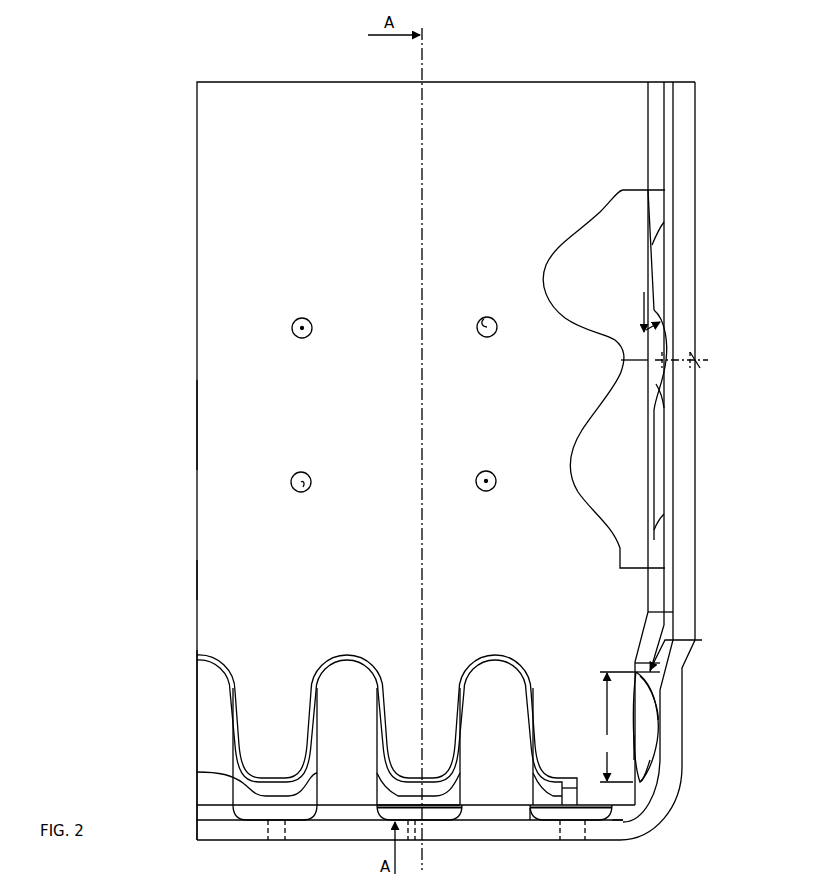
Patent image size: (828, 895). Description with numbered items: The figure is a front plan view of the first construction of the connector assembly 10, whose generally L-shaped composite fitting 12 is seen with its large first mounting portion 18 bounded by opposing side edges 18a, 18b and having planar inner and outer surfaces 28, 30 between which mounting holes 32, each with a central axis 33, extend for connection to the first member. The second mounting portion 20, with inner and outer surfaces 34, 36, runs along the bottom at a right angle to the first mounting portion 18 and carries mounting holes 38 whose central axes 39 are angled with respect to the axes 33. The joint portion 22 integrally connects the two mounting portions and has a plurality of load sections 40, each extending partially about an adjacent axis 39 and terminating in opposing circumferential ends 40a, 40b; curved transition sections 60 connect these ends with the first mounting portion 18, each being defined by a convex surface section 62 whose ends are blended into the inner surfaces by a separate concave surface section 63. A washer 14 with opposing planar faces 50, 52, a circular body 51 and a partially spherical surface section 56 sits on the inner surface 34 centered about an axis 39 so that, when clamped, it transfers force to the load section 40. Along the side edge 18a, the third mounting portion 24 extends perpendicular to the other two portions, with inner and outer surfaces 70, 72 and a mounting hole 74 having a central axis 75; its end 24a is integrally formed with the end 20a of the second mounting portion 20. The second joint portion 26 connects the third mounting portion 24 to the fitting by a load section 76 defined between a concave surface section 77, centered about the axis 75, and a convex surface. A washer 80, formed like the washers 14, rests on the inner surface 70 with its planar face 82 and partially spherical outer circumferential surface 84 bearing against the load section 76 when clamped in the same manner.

The connector assembly 10 is at (88, 628).
The fitting 12 is at (155, 250).
The washer 14 is at (380, 794).
The first mounting portion 18 is at (185, 317).
The side edge of first mounting portion 18a is at (650, 122).
The side edge of first mounting portion 18b is at (197, 423).
The second mounting portion 20 is at (528, 842).
The end of second mounting portion 20a is at (655, 816).
The joint portion 22 is at (187, 708).
The third mounting portion 24 is at (706, 467).
The end of third mounting portion 24a is at (648, 100).
The second joint portion 26 is at (600, 212).
The inner surface of first mounting portion 28 is at (222, 572).
The outer surface of first mounting portion 30 is at (410, 838).
The mounting hole 32 is at (486, 318).
The central axis of mounting hole 33 is at (310, 325).
The inner surface of second mounting portion 34 is at (486, 806).
The outer surface of second mounting portion 36 is at (480, 842).
The mounting hole 38 is at (275, 842).
The central axis of mounting hole 39 is at (272, 848).
The load section 40 is at (262, 794).
The circumferential end of load section 40a is at (316, 812).
The circumferential end of load section 40b is at (236, 814).
The first face of washer 50 is at (572, 780).
The circular body of washer 51 is at (626, 824).
The second face of washer 52 is at (598, 826).
The partially spherical surface section 56 is at (534, 821).
The transition section 60 is at (216, 670).
The convex surface section 62 is at (380, 712).
The concave surface section 63 is at (370, 668).
The inner surface of third mounting portion 70 is at (664, 148).
The outer surface of third mounting portion 72 is at (695, 248).
The mounting hole 74 is at (700, 362).
The central axis of mounting hole 75 is at (700, 360).
The load section 76 is at (646, 340).
The concave surface section 77 is at (655, 392).
The washer 80 is at (634, 708).
The second face of washer 82 is at (656, 702).
The partially spherical outer circumferential surface 84 is at (654, 766).